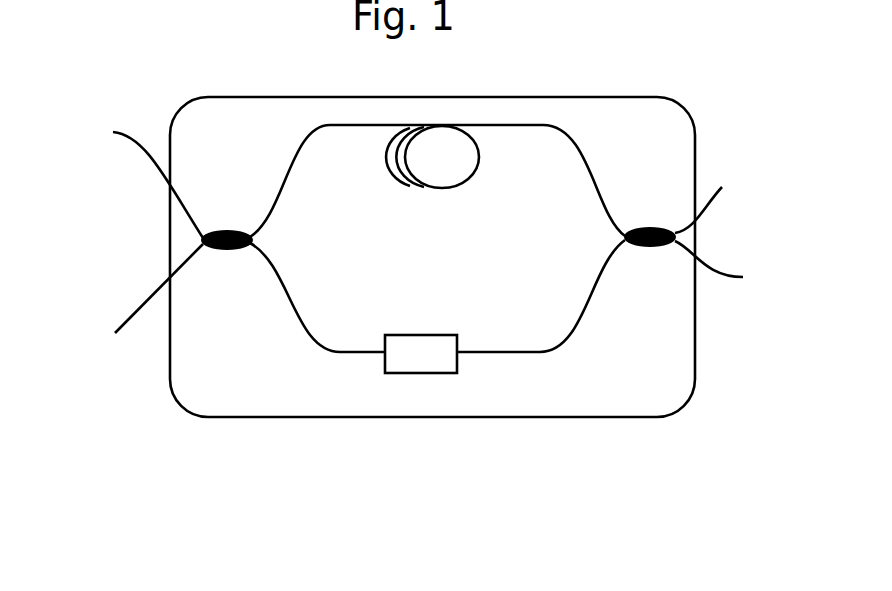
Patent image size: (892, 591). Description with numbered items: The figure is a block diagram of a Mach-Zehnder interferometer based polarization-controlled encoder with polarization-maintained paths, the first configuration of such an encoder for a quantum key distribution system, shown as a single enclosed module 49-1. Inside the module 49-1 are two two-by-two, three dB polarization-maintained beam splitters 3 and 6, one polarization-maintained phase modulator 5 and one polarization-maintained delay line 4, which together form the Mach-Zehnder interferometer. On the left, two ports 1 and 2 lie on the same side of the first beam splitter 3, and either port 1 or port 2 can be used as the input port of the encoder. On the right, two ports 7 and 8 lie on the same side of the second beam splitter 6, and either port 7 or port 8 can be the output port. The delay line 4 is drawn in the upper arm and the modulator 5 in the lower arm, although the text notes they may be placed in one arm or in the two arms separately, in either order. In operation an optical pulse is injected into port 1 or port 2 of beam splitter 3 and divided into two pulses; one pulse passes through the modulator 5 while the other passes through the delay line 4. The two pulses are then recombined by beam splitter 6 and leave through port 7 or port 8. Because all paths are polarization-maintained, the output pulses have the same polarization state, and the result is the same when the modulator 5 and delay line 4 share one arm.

The port 1 is at (132, 163).
The port 2 is at (131, 308).
The polarization-maintained beam splitter 3 is at (227, 279).
The polarization-maintained delay line 4 is at (437, 181).
The polarization-maintained phase modulator 5 is at (437, 306).
The polarization-maintained beam splitter 6 is at (647, 270).
The port 7 is at (724, 186).
The port 8 is at (729, 278).
The optical interferometer module 49-1 is at (432, 294).